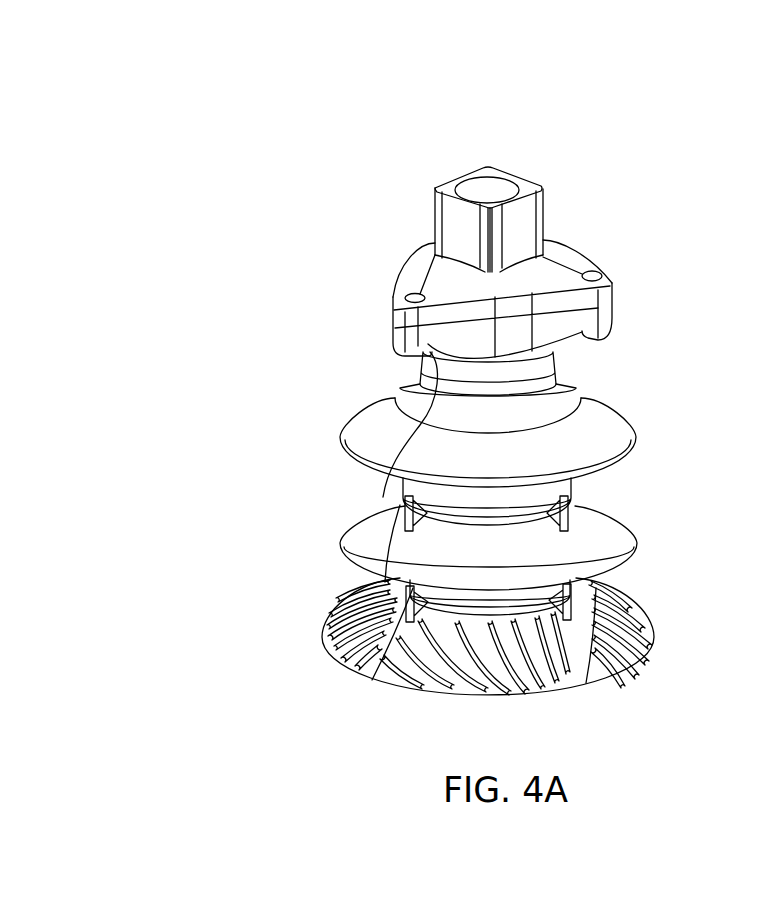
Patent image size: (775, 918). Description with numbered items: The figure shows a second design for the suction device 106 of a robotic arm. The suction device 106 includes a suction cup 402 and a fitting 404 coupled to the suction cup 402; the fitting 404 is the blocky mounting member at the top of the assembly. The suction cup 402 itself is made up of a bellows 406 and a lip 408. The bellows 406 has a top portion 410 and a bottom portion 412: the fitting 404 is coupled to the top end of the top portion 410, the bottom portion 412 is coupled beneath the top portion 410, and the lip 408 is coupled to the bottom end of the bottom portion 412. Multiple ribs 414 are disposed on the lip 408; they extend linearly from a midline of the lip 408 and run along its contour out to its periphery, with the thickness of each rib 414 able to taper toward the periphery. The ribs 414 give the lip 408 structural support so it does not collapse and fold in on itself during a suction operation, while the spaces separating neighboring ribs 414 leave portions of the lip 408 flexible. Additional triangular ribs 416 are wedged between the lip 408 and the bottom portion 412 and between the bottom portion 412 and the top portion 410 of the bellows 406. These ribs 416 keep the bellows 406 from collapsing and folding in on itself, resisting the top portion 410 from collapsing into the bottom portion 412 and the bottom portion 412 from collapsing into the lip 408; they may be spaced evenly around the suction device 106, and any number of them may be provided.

The suction device 106 is at (505, 125).
The suction cup 402 is at (213, 695).
The fitting 404 is at (594, 272).
The bellows 406 is at (634, 433).
The lip 408 is at (656, 630).
The top portion 410 is at (338, 437).
The bottom portion 412 is at (343, 541).
The ribs 414 is at (345, 640).
The ribs 416 is at (402, 505).